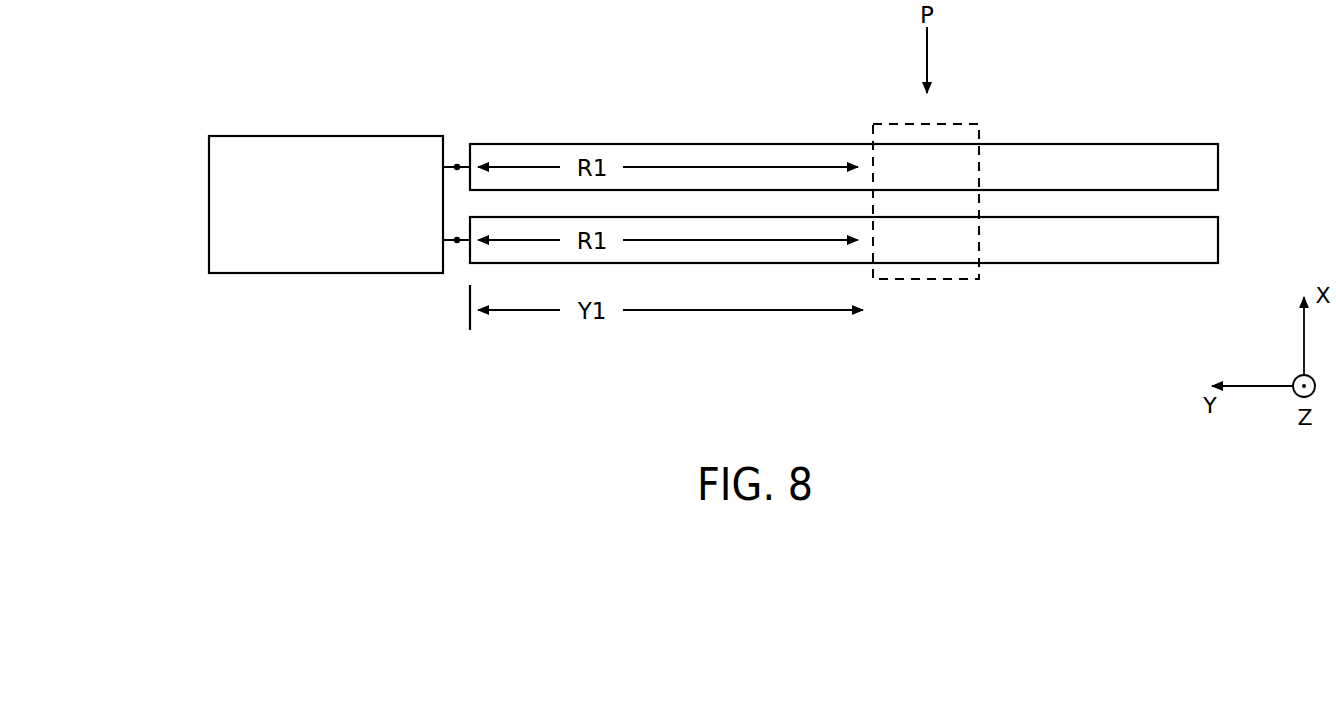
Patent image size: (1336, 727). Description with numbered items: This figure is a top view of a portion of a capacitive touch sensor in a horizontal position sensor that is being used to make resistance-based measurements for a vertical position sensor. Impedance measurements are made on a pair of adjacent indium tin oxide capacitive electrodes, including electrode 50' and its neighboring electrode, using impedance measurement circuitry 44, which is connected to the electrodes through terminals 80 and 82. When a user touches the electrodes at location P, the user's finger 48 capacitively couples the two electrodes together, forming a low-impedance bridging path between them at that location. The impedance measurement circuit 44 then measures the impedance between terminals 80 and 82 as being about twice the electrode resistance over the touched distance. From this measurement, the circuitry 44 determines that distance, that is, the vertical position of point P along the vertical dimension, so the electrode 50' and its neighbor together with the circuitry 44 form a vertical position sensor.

The impedance measurement circuitry 44 is at (343, 135).
The terminal 80 is at (457, 165).
The terminal 82 is at (459, 245).
The electrode 50' is at (844, 132).
The user's finger 48 is at (945, 280).